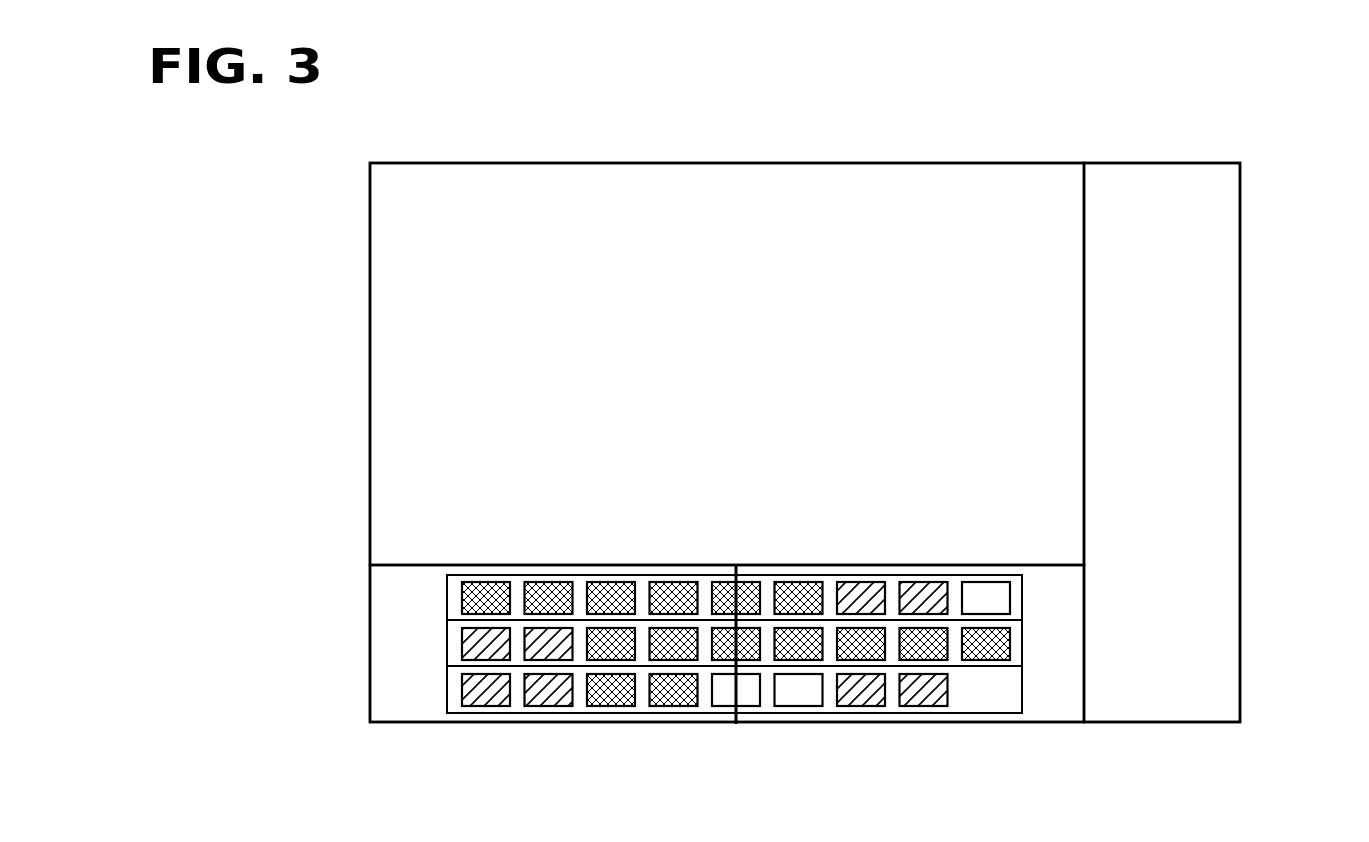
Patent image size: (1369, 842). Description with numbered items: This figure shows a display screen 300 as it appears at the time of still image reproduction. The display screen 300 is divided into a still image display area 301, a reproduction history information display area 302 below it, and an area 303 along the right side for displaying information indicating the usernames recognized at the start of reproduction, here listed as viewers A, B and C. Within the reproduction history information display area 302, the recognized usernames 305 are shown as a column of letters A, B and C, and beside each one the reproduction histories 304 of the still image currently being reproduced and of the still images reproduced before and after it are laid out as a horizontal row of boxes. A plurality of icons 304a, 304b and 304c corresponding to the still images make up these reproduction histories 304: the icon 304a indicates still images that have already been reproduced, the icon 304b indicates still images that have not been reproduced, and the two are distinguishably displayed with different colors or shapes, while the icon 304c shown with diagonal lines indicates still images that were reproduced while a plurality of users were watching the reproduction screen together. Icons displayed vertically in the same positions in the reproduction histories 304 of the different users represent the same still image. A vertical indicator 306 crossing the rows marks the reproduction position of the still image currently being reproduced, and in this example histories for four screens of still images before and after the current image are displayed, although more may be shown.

The display screen 300 is at (588, 92).
The still image display area 301 is at (804, 162).
The reproduction history information display area 302 is at (369, 632).
The area for displaying information indicating usernames 303 is at (1242, 220).
The reproduction histories 304 is at (1000, 708).
The icon indicating still images that have been reproduced 304a is at (613, 708).
The icon indicating still images that have not been reproduced 304b is at (814, 708).
The icon shown with diagonal lines 304c is at (914, 708).
The recognized usernames 305 is at (416, 705).
The indicator 306 is at (738, 722).